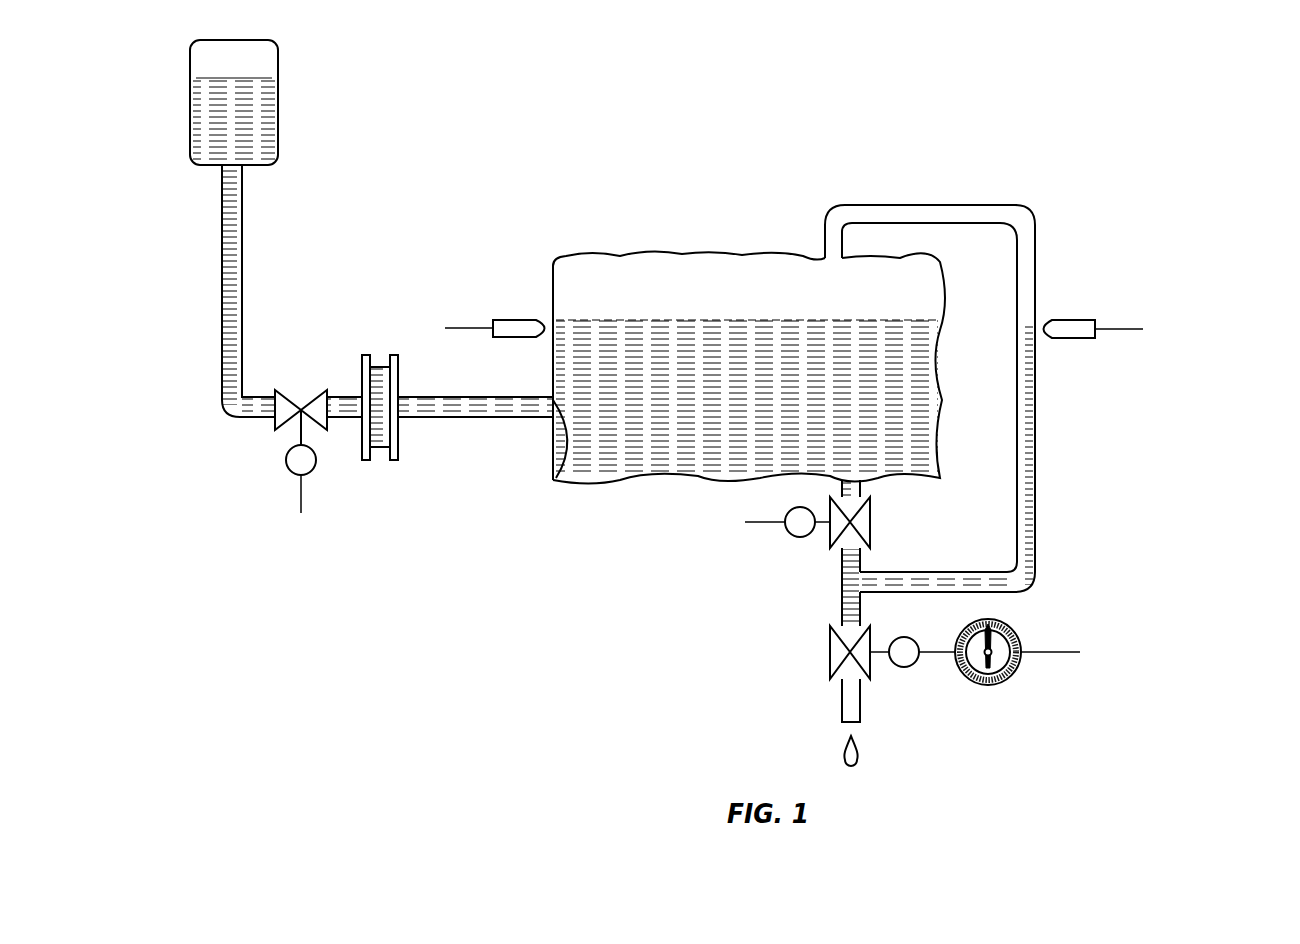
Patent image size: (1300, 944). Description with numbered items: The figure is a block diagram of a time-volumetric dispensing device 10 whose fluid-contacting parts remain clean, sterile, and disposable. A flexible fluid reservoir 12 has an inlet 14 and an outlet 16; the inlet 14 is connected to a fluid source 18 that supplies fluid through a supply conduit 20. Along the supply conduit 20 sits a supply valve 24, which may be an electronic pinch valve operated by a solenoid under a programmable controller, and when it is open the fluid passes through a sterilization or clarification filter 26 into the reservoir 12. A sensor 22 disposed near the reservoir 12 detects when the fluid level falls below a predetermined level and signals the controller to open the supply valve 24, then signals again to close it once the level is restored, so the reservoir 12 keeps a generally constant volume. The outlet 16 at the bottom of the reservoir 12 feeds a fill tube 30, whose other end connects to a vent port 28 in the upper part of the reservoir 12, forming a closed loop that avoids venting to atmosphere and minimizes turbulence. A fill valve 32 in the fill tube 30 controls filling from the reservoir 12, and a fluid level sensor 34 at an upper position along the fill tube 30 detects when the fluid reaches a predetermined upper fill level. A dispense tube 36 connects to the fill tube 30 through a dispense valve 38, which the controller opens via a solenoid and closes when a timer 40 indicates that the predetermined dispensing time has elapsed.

The time-volumetric dispensing device 10 is at (1075, 82).
The fluid reservoir 12 is at (617, 257).
The inlet 14 is at (564, 466).
The outlet 16 is at (895, 479).
The fluid source 18 is at (278, 78).
The supply conduit 20 is at (222, 258).
The sensor 22 is at (520, 320).
The supply valve 24 is at (275, 416).
The sterilization or clarification filter 26 is at (400, 440).
The vent port 28 is at (820, 258).
The fill tube 30 is at (1037, 268).
The fill valve 32 is at (866, 540).
The fluid level sensor 34 is at (1060, 320).
The dispense tube 36 is at (862, 705).
The dispense valve 38 is at (838, 666).
The timer 40 is at (1025, 630).